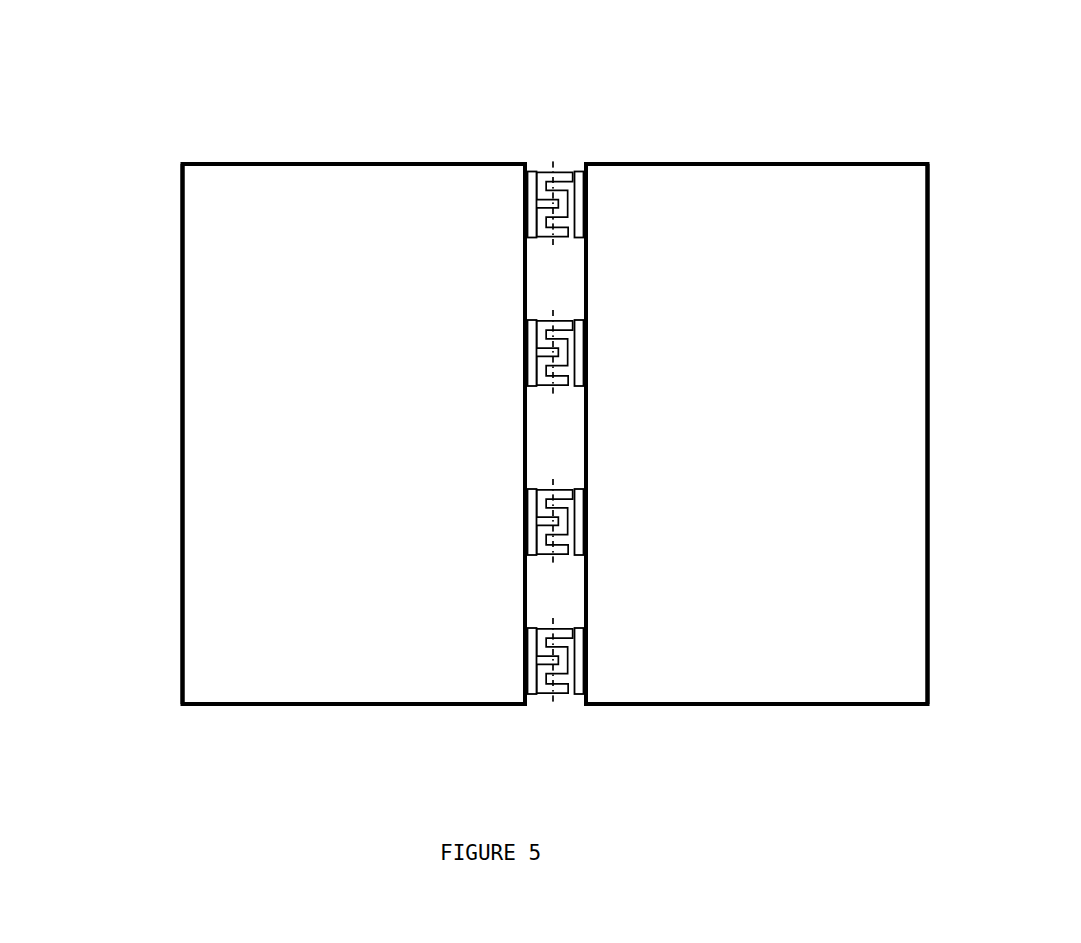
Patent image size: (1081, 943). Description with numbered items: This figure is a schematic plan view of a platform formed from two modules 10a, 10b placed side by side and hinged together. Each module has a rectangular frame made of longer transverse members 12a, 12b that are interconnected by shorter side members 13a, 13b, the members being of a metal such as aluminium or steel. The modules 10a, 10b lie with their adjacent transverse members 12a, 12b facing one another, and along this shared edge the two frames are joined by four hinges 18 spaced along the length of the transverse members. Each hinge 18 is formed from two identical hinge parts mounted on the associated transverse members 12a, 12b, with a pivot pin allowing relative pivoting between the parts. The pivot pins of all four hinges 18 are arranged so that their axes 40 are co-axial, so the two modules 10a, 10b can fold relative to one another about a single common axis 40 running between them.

The module 10a is at (345, 647).
The module 10b is at (745, 643).
The transverse member 12a is at (181, 449).
The transverse member 12b is at (929, 455).
The side member 13a is at (416, 706).
The side member 13b is at (356, 163).
The hinge 18 is at (562, 170).
The axis 40 is at (553, 166).